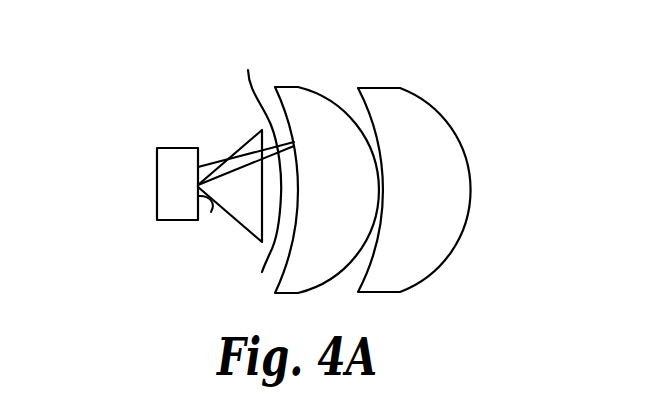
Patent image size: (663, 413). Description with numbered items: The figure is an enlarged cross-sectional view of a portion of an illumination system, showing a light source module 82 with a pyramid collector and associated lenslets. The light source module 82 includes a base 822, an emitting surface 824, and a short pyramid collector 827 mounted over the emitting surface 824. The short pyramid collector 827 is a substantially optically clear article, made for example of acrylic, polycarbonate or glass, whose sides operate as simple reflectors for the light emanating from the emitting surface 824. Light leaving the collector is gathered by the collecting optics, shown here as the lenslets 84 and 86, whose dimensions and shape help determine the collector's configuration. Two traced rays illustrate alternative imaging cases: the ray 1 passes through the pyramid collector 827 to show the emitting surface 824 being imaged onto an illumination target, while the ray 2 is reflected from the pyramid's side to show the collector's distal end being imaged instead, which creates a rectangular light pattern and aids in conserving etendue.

The light source module 82 is at (142, 133).
The base 822 is at (165, 197).
The emitting surface 824 is at (211, 212).
The short pyramid collector 827 is at (252, 132).
The lenslet 84 is at (303, 93).
The lenslet 86 is at (428, 110).
The ray 1 is at (263, 244).
The ray 2 is at (263, 116).